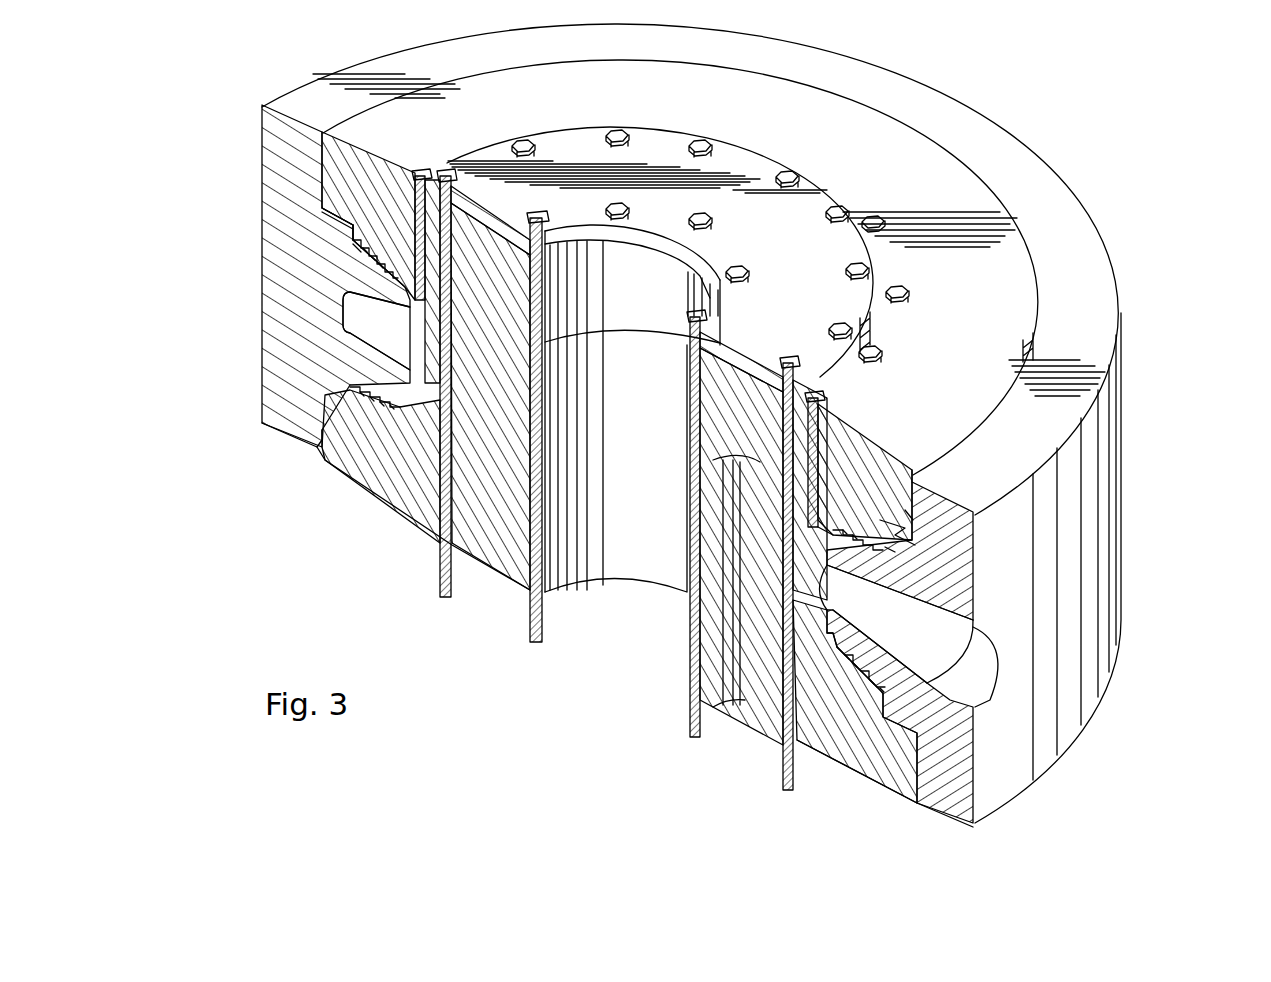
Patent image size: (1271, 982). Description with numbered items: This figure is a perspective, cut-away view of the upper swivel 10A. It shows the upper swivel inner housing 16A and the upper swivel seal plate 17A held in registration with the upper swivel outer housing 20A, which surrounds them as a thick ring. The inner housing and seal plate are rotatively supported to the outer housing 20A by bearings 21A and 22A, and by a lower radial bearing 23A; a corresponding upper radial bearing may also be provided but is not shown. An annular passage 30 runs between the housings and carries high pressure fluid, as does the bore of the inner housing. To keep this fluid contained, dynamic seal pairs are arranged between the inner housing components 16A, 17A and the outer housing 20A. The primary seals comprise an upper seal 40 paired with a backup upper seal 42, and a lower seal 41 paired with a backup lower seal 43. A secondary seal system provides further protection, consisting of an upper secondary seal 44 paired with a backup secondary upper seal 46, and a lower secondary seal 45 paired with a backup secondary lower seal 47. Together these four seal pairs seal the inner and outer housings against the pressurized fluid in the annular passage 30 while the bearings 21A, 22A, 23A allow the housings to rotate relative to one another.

The upper swivel 10A is at (1142, 322).
The upper swivel inner housing 16A is at (895, 783).
The upper swivel seal plate 17A is at (910, 433).
The upper swivel outer housing 20A is at (276, 258).
The bearing 21A is at (328, 206).
The bearing 22A is at (327, 467).
The lower radial bearing 23A is at (322, 405).
The annular passage 30 is at (345, 313).
The upper seal 40 is at (407, 277).
The lower seal 41 is at (392, 408).
The backup upper seal 42 is at (375, 275).
The backup lower seal 43 is at (330, 340).
The upper secondary seal 44 is at (363, 247).
The lower secondary seal 45 is at (373, 403).
The backup secondary upper seal 46 is at (356, 248).
The backup secondary lower seal 47 is at (378, 398).